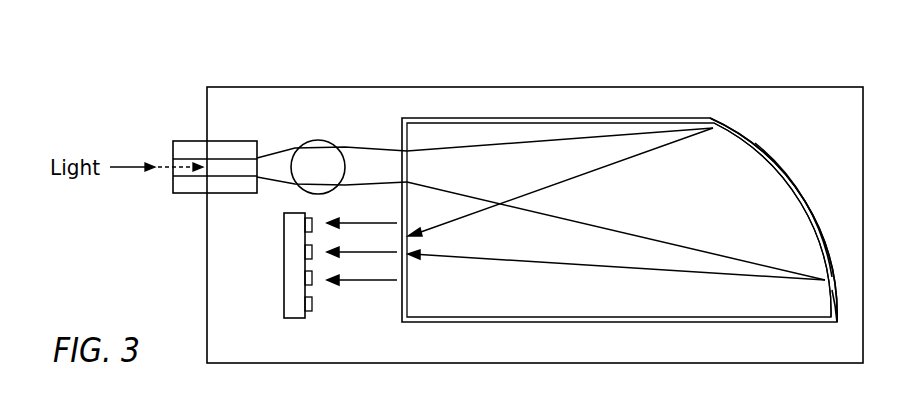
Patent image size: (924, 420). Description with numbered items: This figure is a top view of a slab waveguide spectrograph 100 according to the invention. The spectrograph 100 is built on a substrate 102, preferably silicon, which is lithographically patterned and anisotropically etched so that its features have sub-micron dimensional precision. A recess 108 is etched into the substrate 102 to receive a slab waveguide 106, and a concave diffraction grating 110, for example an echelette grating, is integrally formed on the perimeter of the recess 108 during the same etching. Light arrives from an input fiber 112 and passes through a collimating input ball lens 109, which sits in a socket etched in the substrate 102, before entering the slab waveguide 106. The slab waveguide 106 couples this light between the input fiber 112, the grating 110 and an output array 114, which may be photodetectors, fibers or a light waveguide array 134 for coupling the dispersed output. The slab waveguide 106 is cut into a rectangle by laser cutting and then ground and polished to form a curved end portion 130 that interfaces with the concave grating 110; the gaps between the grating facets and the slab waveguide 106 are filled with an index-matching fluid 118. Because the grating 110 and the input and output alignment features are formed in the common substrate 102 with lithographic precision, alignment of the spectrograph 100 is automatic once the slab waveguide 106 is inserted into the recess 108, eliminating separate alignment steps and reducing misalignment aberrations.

The slab waveguide spectrograph 100 is at (194, 60).
The substrate 102 is at (535, 225).
The slab waveguide 106 is at (780, 226).
The recess 108 is at (505, 327).
The collimating input ball lens 109 is at (328, 140).
The concave diffraction grating 110 is at (764, 128).
The input fiber 112 is at (190, 186).
The output array 114 is at (304, 309).
The index-matching fluid 118 is at (839, 307).
The curved end portion 130 is at (798, 166).
The light waveguide array 134 is at (312, 282).